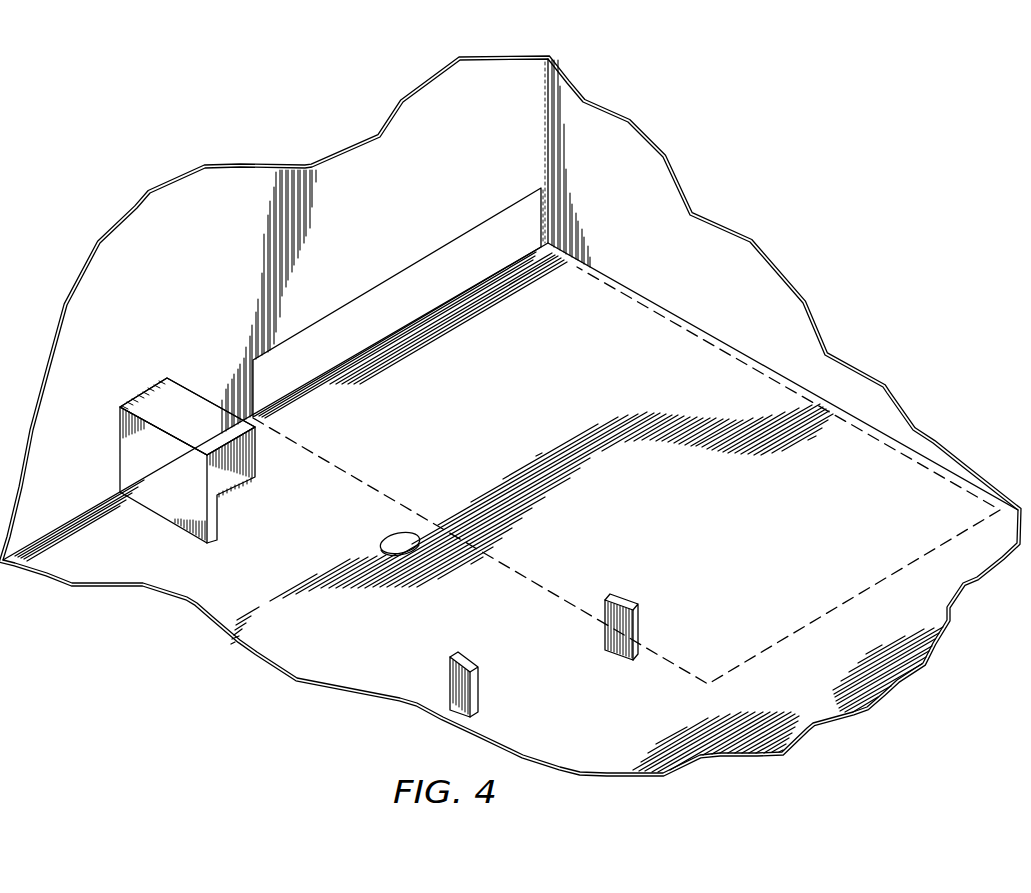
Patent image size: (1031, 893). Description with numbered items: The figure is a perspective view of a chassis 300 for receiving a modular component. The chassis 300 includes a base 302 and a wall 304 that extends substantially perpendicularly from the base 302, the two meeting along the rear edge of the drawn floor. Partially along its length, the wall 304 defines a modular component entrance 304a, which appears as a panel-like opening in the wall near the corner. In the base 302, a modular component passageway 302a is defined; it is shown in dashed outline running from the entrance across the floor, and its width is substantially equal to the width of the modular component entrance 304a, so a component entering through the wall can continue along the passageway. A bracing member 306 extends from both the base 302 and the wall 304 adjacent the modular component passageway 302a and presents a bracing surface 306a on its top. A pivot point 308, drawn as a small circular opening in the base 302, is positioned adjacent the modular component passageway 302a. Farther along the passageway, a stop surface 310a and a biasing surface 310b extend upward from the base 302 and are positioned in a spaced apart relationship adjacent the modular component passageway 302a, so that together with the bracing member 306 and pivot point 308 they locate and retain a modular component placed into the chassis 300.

The chassis 300 is at (865, 226).
The base 302 is at (218, 595).
The modular component passageway 302a is at (873, 588).
The wall 304 is at (122, 257).
The modular component entrance 304a is at (372, 292).
The bracing member 306 is at (153, 398).
The bracing surface 306a is at (183, 381).
The pivot point 308 is at (410, 533).
The stop surface 310a is at (640, 623).
The biasing surface 310b is at (475, 685).